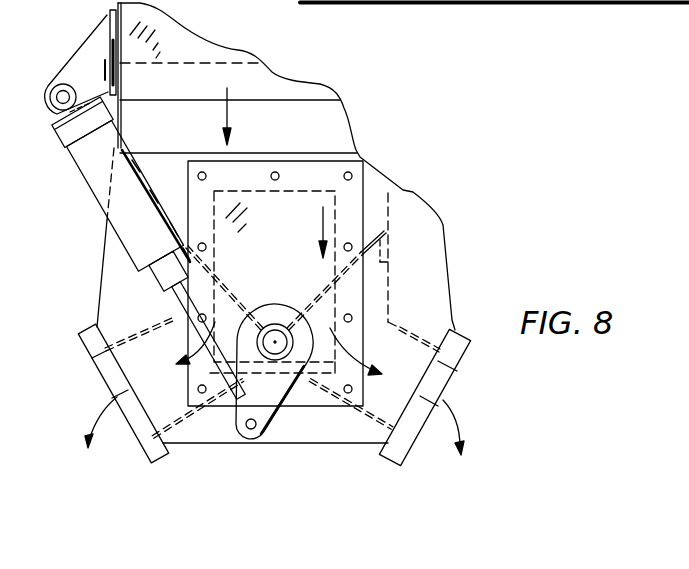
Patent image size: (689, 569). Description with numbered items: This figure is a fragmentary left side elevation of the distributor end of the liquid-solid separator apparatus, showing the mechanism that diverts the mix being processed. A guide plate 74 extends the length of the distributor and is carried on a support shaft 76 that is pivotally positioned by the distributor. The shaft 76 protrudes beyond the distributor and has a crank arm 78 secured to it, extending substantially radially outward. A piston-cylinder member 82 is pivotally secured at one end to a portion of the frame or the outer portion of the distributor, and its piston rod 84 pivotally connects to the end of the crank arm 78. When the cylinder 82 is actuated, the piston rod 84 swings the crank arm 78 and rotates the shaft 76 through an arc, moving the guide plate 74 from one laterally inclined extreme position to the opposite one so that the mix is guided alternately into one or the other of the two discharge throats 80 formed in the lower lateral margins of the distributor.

The guide plate 74 is at (230, 276).
The support shaft 76 is at (278, 326).
The crank arm 78 is at (245, 392).
The discharge throats 80 is at (110, 375).
The piston-cylinder member 82 is at (90, 190).
The piston rod 84 is at (172, 313).